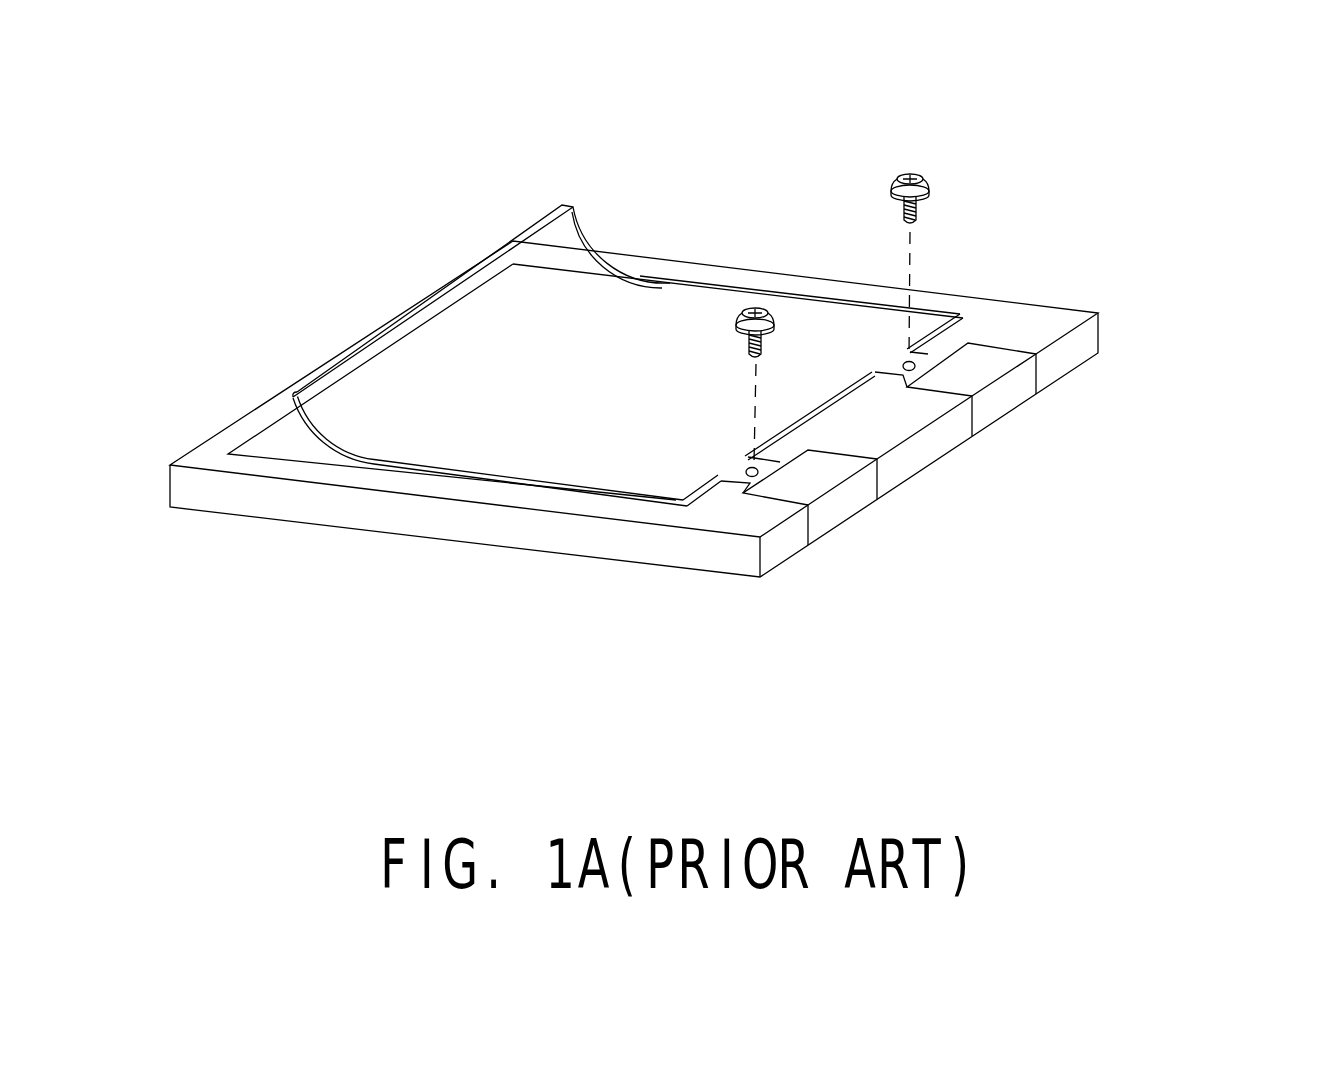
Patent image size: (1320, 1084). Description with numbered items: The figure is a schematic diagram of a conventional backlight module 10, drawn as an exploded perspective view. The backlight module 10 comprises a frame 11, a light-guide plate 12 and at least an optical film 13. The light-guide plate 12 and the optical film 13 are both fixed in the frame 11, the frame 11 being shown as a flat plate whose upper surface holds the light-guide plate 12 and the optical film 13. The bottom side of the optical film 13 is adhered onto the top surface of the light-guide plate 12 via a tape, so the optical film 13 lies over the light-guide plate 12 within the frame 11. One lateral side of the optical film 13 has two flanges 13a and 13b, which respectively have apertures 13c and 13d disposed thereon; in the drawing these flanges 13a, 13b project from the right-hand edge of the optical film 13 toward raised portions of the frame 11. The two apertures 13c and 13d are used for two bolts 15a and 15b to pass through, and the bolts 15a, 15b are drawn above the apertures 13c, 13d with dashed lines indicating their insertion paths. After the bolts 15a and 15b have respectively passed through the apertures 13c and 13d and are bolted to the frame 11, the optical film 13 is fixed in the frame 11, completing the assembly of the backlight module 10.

The backlight module 10 is at (1292, 159).
The frame 11 is at (1065, 348).
The light-guide plate 12 is at (300, 447).
The optical film 13 is at (692, 372).
The flange 13a is at (915, 363).
The flange 13b is at (745, 470).
The aperture 13c is at (921, 370).
The aperture 13d is at (766, 473).
The bolt 15a is at (913, 176).
The bolt 15b is at (757, 309).